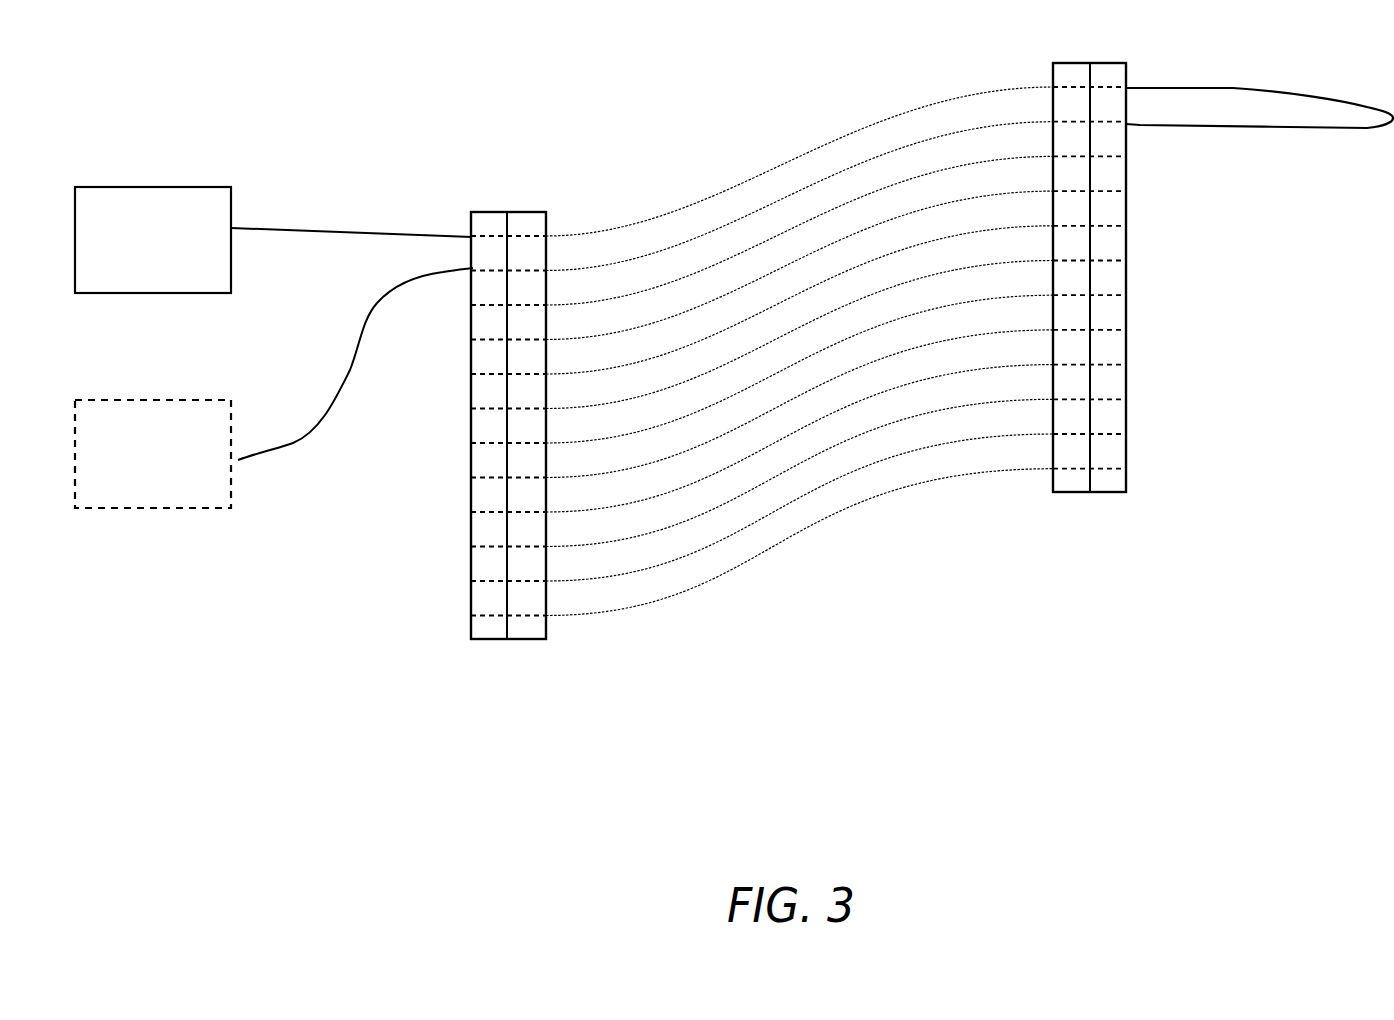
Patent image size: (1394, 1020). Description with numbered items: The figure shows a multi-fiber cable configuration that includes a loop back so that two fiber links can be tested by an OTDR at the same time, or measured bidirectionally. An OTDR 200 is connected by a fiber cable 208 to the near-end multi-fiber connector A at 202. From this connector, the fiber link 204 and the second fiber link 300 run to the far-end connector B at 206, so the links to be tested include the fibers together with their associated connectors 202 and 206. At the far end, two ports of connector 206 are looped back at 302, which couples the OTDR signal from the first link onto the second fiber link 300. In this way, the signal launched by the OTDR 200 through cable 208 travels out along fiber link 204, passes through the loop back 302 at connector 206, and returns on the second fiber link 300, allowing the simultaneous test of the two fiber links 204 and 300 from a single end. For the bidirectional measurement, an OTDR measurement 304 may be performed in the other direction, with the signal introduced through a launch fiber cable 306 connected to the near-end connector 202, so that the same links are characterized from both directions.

The OTDR 200 is at (142, 182).
The multi-fiber connector A 202 is at (510, 209).
The fiber link 204 is at (799, 330).
The connector B 206 is at (1090, 62).
The fiber cable 208 is at (305, 228).
The second fiber link 300 is at (861, 148).
The loop back 302 is at (1236, 84).
The OTDR measurement 304 is at (138, 400).
The launch fiber cable 306 is at (287, 449).